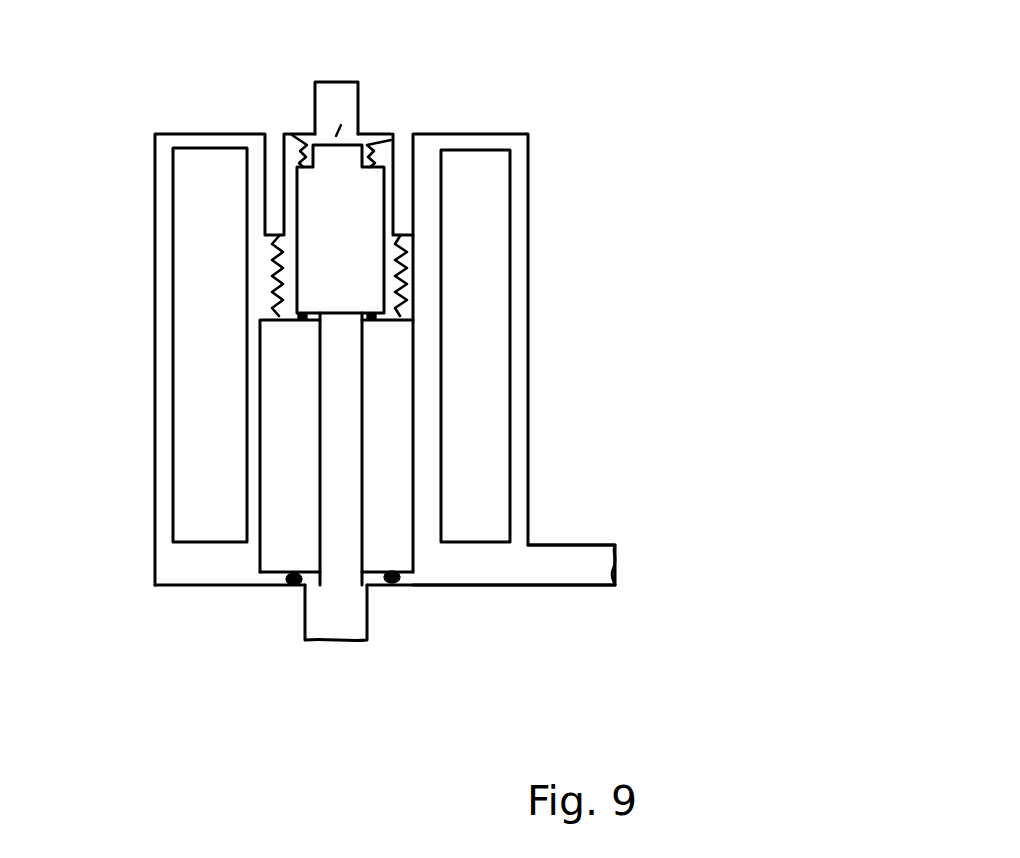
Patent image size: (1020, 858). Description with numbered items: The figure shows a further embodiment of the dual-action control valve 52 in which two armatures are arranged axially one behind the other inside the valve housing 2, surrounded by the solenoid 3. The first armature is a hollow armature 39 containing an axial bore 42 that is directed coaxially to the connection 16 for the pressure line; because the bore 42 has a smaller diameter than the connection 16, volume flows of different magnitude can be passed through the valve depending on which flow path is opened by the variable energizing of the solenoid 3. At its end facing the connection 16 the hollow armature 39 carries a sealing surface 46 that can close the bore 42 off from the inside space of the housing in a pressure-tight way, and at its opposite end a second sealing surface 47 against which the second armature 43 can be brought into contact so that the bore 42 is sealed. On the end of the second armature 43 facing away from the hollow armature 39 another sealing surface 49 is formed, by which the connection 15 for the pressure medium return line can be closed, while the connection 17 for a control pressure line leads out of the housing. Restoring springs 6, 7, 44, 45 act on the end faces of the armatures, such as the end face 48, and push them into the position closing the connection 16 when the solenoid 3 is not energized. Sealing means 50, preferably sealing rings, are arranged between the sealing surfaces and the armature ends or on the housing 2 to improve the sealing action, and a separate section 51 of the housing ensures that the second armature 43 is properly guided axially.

The valve housing 2 is at (530, 207).
The solenoid 3 is at (192, 207).
The restoring spring 6 is at (273, 275).
The restoring spring 7 is at (407, 273).
The connection for a return line 15 is at (360, 100).
The connection for a pressure line 16 is at (363, 620).
The connection for a control pressure line 17 is at (580, 543).
The hollow armature 39 is at (403, 443).
The bore 42 is at (341, 373).
The second armature 43 is at (324, 256).
The restoring spring 44 is at (390, 143).
The restoring spring 45 is at (307, 147).
The sealing surface 46 is at (280, 602).
The sealing surface 47 is at (386, 325).
The end face 48 is at (336, 314).
The sealing surface 49 is at (330, 143).
The sealing means 50 is at (403, 578).
The section of housing 51 is at (402, 188).
The dual-action control valve 52 is at (758, 268).